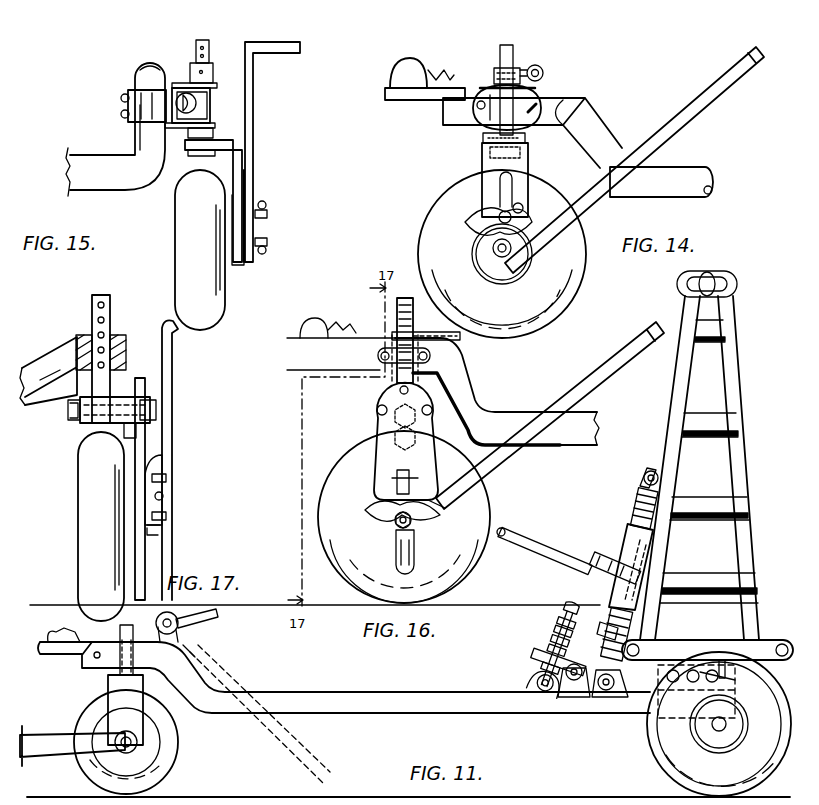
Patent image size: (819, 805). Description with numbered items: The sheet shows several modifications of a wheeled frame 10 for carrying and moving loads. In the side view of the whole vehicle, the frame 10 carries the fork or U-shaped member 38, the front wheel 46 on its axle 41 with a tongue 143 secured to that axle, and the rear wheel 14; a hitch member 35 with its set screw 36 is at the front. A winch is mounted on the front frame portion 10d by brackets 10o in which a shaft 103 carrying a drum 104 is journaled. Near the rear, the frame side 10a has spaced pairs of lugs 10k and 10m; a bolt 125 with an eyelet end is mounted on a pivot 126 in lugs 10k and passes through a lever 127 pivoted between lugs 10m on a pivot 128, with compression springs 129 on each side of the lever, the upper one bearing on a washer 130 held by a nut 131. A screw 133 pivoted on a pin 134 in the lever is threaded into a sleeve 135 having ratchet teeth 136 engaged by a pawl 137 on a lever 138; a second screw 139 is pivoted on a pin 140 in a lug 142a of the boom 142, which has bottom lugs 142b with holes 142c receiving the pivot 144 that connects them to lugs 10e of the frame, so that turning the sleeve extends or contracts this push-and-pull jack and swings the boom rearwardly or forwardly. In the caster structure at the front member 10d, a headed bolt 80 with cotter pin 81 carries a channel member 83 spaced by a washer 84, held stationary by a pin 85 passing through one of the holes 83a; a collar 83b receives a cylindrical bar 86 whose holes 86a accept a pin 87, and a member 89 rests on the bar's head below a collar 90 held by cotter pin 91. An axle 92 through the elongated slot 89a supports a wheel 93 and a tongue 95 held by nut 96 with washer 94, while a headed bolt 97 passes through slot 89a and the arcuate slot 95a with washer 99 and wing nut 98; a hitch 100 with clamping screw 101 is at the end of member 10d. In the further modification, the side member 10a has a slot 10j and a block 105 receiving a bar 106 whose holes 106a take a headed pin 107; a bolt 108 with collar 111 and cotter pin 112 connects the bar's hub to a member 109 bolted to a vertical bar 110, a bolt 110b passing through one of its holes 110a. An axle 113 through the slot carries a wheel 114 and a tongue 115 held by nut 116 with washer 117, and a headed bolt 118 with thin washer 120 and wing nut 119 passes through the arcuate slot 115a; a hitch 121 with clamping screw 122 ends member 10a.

In FIG. 11, the frame 10 is at (361, 728).
In FIG. 15, the side of the frame 10a is at (133, 96).
In FIG. 14, the side of the frame 10a is at (706, 172).
In FIG. 17, the side of the frame 10a is at (66, 348).
In FIG. 16, the side of the frame 10a is at (435, 400).
In FIG. 11, the side of the frame 10a is at (413, 705).
In FIG. 14, the member at the front of the frame 10d is at (598, 128).
In FIG. 11, the member at the front of the frame 10d is at (212, 668).
In FIG. 11, the lugs on frame 10e is at (690, 688).
In FIG. 16, the transverse opening or slot 10j is at (400, 389).
In FIG. 11, the lugs 10k is at (527, 676).
In FIG. 11, the lugs 10m is at (612, 672).
In FIG. 11, the brackets 10o is at (196, 648).
In FIG. 11, the wheel 14 is at (662, 745).
In FIG. 11, the hitch member 35 is at (58, 644).
In FIG. 11, the set screw 36 is at (70, 630).
In FIG. 11, the fork or U-shaped member 38 is at (117, 683).
In FIG. 11, the axle member 41 is at (140, 742).
In FIG. 11, the wheel 46 is at (176, 756).
In FIG. 15, the headed bolt 80 is at (126, 98).
In FIG. 14, the headed bolt 80 is at (477, 105).
In FIG. 15, the cotter pin 81 is at (123, 115).
In FIG. 15, the channel-shaped member 83 is at (210, 82).
In FIG. 14, the holes 83a is at (488, 110).
In FIG. 15, the collar 83b is at (190, 72).
In FIG. 15, the washer 84 is at (166, 84).
In FIG. 15, the pin 85 is at (196, 103).
In FIG. 14, the pin 85 is at (533, 99).
In FIG. 15, the cylindrical bar 86 is at (209, 42).
In FIG. 14, the cylindrical bar 86 is at (513, 46).
In FIG. 15, the holes 86a is at (205, 56).
In FIG. 15, the pin 87 is at (214, 86).
In FIG. 14, the pin 87 is at (494, 76).
In FIG. 15, the member 89 is at (242, 152).
In FIG. 14, the elongated slot 89a is at (498, 180).
In FIG. 15, the collar 90 is at (215, 125).
In FIG. 14, the collar 90 is at (522, 152).
In FIG. 15, the cotter pin 91 is at (189, 133).
In FIG. 14, the cotter pin 91 is at (526, 138).
In FIG. 15, the axle 92 is at (266, 250).
In FIG. 14, the axle 92 is at (493, 248).
In FIG. 15, the wheel 93 is at (178, 248).
In FIG. 14, the wheel 93 is at (580, 224).
In FIG. 15, the washer 94 is at (240, 263).
In FIG. 15, the handle member or tongue 95 is at (254, 128).
In FIG. 14, the handle member or tongue 95 is at (720, 96).
In FIG. 14, the arcuate slot 95a is at (492, 220).
In FIG. 15, the nut 96 is at (266, 234).
In FIG. 14, the nut 96 is at (508, 253).
In FIG. 15, the headed bolt 97 is at (266, 207).
In FIG. 14, the headed bolt 97 is at (511, 215).
In FIG. 15, the wing nut 98 is at (262, 209).
In FIG. 14, the wing nut 98 is at (523, 206).
In FIG. 15, the washer 99 is at (246, 186).
In FIG. 15, the hitch 100 is at (145, 70).
In FIG. 14, the hitch 100 is at (395, 73).
In FIG. 14, the clamping screw 101 is at (432, 68).
In FIG. 11, the shaft 103 is at (214, 618).
In FIG. 11, the drum 104 is at (163, 612).
In FIG. 17, the block 105 is at (119, 346).
In FIG. 17, the cylindrical bar 106 is at (112, 325).
In FIG. 16, the cylindrical bar 106 is at (414, 305).
In FIG. 17, the holes 106a is at (92, 301).
In FIG. 16, the holes 106a is at (462, 336).
In FIG. 16, the headed pin 107 is at (432, 357).
In FIG. 17, the headed bolt 108 is at (156, 404).
In FIG. 16, the headed bolt 108 is at (394, 415).
In FIG. 17, the member 109 is at (147, 430).
In FIG. 17, the vertical bar-like member 110 is at (152, 397).
In FIG. 16, the holes / elongated slot 110a is at (397, 478).
In FIG. 17, the bolt 110b is at (124, 432).
In FIG. 16, the bolt 110b is at (394, 437).
In FIG. 17, the collar 111 is at (72, 410).
In FIG. 17, the cotter pin 112 is at (76, 386).
In FIG. 17, the axle 113 is at (167, 517).
In FIG. 16, the axle 113 is at (394, 520).
In FIG. 17, the wheel 114 is at (86, 516).
In FIG. 16, the wheel 114 is at (470, 502).
In FIG. 17, the handle member or tongue 115 is at (175, 345).
In FIG. 16, the handle member or tongue 115 is at (592, 372).
In FIG. 16, the arcuate slot 115a is at (425, 503).
In FIG. 17, the nut 116 is at (162, 526).
In FIG. 16, the nut 116 is at (412, 519).
In FIG. 17, the washer 117 is at (152, 524).
In FIG. 17, the headed bolt 118 is at (167, 479).
In FIG. 16, the headed bolt 118 is at (412, 497).
In FIG. 17, the wing nut 119 is at (164, 496).
In FIG. 16, the wing nut 119 is at (388, 512).
In FIG. 17, the thin washer 120 is at (160, 458).
In FIG. 16, the hitch 121 is at (300, 318).
In FIG. 16, the clamping screw 122 is at (340, 318).
In FIG. 11, the bolt 125 is at (560, 629).
In FIG. 11, the pivot 126 is at (538, 704).
In FIG. 11, the lever 127 is at (532, 644).
In FIG. 11, the pivot 128 is at (607, 691).
In FIG. 11, the compression springs 129 is at (528, 648).
In FIG. 11, the washer 130 is at (543, 612).
In FIG. 11, the nut 131 is at (546, 600).
In FIG. 11, the screw 133 is at (618, 630).
In FIG. 11, the pin 134 is at (574, 681).
In FIG. 11, the sleeve 135 is at (622, 545).
In FIG. 11, the ratchet teeth 136 is at (635, 582).
In FIG. 11, the pawl 137 is at (595, 560).
In FIG. 11, the lever 138 is at (516, 534).
In FIG. 11, the screw 139 is at (640, 500).
In FIG. 11, the pivot pin 140 is at (649, 470).
In FIG. 11, the boom 142 is at (730, 330).
In FIG. 11, the lug 142a is at (659, 478).
In FIG. 11, the lugs 142b is at (723, 660).
In FIG. 11, the holes 142c is at (740, 680).
In FIG. 11, the tongue 143 is at (42, 752).
In FIG. 11, the pivot 144 is at (682, 665).